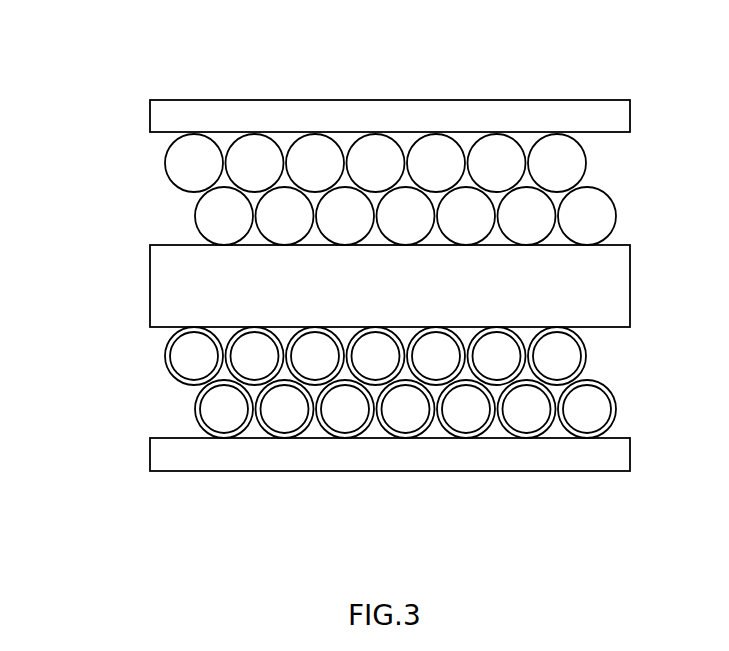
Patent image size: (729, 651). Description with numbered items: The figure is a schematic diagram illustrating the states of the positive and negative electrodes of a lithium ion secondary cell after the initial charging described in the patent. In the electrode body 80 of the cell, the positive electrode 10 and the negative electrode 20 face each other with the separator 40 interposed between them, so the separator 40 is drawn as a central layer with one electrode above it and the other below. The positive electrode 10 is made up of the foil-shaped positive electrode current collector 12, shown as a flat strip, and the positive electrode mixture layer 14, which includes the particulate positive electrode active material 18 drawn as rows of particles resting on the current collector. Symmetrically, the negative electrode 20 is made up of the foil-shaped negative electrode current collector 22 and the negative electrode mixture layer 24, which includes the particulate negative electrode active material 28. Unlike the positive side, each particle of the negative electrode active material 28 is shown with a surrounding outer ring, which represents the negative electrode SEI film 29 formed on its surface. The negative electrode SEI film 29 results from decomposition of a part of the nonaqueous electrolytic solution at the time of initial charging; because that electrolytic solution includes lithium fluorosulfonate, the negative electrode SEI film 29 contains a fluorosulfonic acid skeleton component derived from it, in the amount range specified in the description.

The electrode body 80 is at (672, 50).
The positive electrode 10 is at (80, 103).
The positive electrode current collector 12 is at (150, 118).
The positive electrode mixture layer 14 is at (139, 142).
The positive electrode active material 18 is at (594, 210).
The separator 40 is at (150, 290).
The negative electrode 20 is at (80, 367).
The negative electrode current collector 22 is at (150, 452).
The negative electrode mixture layer 24 is at (139, 337).
The negative electrode active material 28 is at (593, 398).
The negative electrode SEI film 29 is at (585, 348).